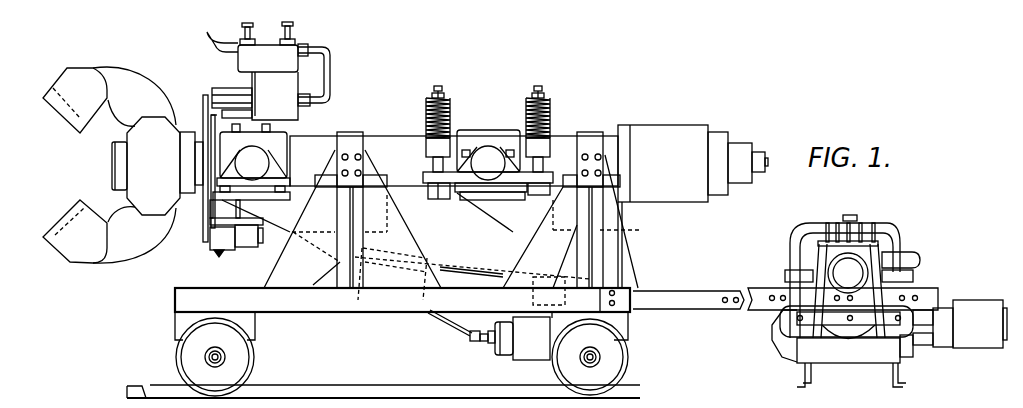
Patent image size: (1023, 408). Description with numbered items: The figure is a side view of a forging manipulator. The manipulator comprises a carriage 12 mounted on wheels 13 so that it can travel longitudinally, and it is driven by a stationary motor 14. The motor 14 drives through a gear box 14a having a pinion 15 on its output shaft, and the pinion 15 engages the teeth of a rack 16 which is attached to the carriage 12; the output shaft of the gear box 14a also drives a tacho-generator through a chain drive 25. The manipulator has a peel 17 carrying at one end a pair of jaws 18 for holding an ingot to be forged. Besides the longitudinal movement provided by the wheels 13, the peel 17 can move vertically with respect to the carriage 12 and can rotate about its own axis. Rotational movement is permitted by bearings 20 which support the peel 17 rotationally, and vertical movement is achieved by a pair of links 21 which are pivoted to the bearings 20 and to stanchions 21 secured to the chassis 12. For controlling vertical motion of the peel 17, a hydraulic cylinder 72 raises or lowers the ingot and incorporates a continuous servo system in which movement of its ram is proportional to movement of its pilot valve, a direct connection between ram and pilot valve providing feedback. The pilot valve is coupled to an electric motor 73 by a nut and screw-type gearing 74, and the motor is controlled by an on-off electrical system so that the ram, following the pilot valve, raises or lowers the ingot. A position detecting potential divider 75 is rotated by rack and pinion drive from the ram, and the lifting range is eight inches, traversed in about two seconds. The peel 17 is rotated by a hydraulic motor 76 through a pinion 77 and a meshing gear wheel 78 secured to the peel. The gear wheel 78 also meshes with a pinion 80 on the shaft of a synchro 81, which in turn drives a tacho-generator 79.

The carriage 12 is at (178, 296).
The wheels 13 is at (177, 353).
The stationary motor 14 is at (975, 317).
The gear box 14a is at (863, 233).
The pinion 15 is at (812, 267).
The rack 16 is at (740, 289).
The peel 17 is at (392, 147).
The jaws 18 is at (125, 73).
The bearings 20 is at (278, 152).
The links and stanchions 21 is at (350, 138).
The chain drive 25 is at (893, 253).
The hydraulic cylinder 72 is at (410, 275).
The electric motor 73 is at (527, 356).
The nut and screw-type gearing 74 is at (375, 300).
The position detecting potential divider 75 is at (545, 278).
The hydraulic motor 76 is at (275, 76).
The pinion 77 is at (204, 100).
The gear wheel 78 is at (210, 208).
The tacho-generator 79 is at (247, 246).
The pinion 80 is at (210, 229).
The synchro 81 is at (217, 241).